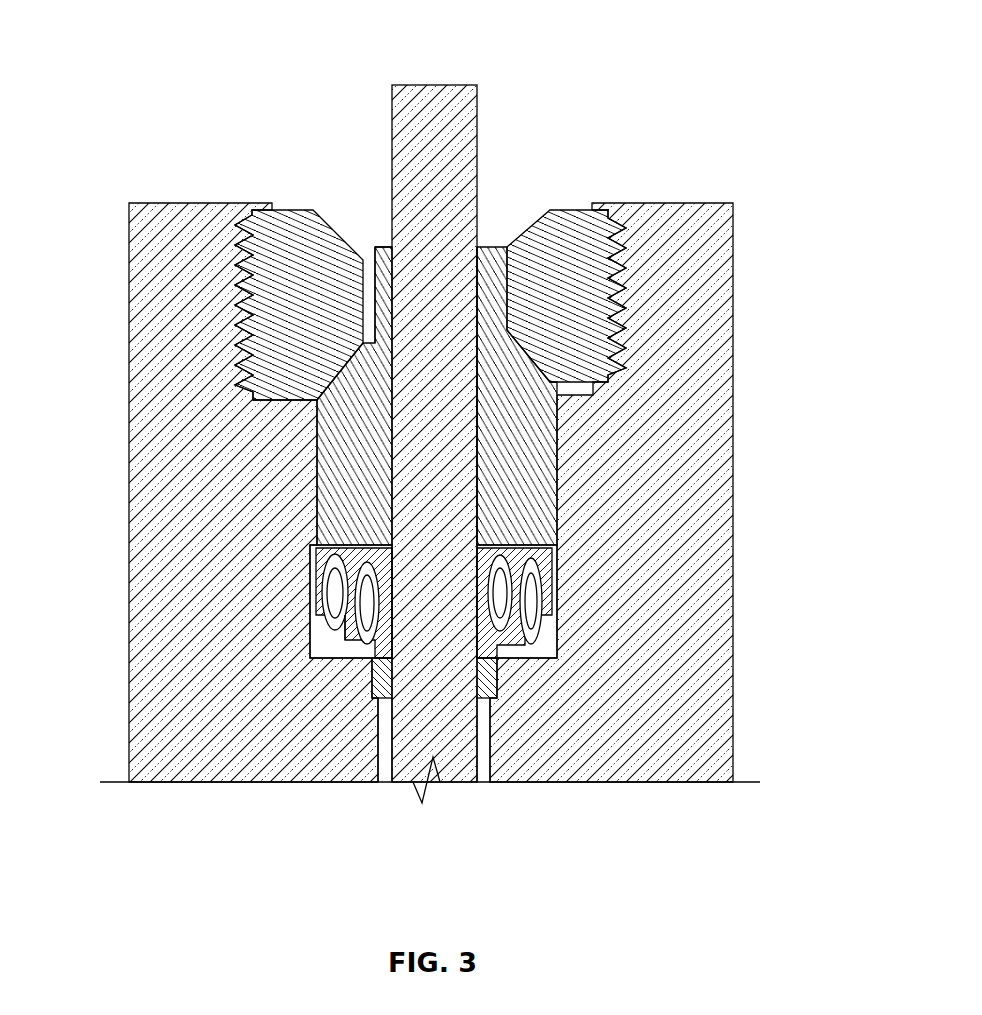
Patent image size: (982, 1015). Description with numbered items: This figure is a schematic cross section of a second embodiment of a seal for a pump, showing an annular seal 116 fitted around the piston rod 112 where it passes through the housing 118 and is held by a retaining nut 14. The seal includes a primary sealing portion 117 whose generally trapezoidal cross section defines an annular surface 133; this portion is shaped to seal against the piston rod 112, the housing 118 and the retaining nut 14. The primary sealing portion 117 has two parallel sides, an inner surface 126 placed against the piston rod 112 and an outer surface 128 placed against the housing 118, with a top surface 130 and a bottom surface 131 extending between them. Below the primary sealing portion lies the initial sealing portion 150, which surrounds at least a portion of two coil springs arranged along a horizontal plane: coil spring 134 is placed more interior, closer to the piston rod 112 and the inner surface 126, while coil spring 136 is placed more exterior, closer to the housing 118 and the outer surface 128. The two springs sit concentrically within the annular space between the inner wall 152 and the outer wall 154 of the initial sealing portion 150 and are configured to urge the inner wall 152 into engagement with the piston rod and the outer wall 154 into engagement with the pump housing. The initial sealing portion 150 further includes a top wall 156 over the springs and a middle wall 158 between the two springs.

The piston rod 112 is at (436, 85).
The retaining nut 14 is at (566, 222).
The housing 118 is at (683, 203).
The annular seal 116 is at (268, 457).
The annular surface 133 is at (366, 330).
The top surface 130 is at (377, 246).
The primary sealing portion 117 is at (352, 497).
The inner surface 126 is at (477, 470).
The outer surface 128 is at (557, 508).
The initial sealing portion 150 is at (556, 552).
The top wall 156 is at (312, 552).
The outer wall 154 is at (317, 598).
The middle wall 158 is at (350, 650).
The inner wall 152 is at (395, 640).
The bottom surface 131 is at (378, 700).
The coil spring 136 is at (533, 647).
The coil spring 134 is at (497, 698).